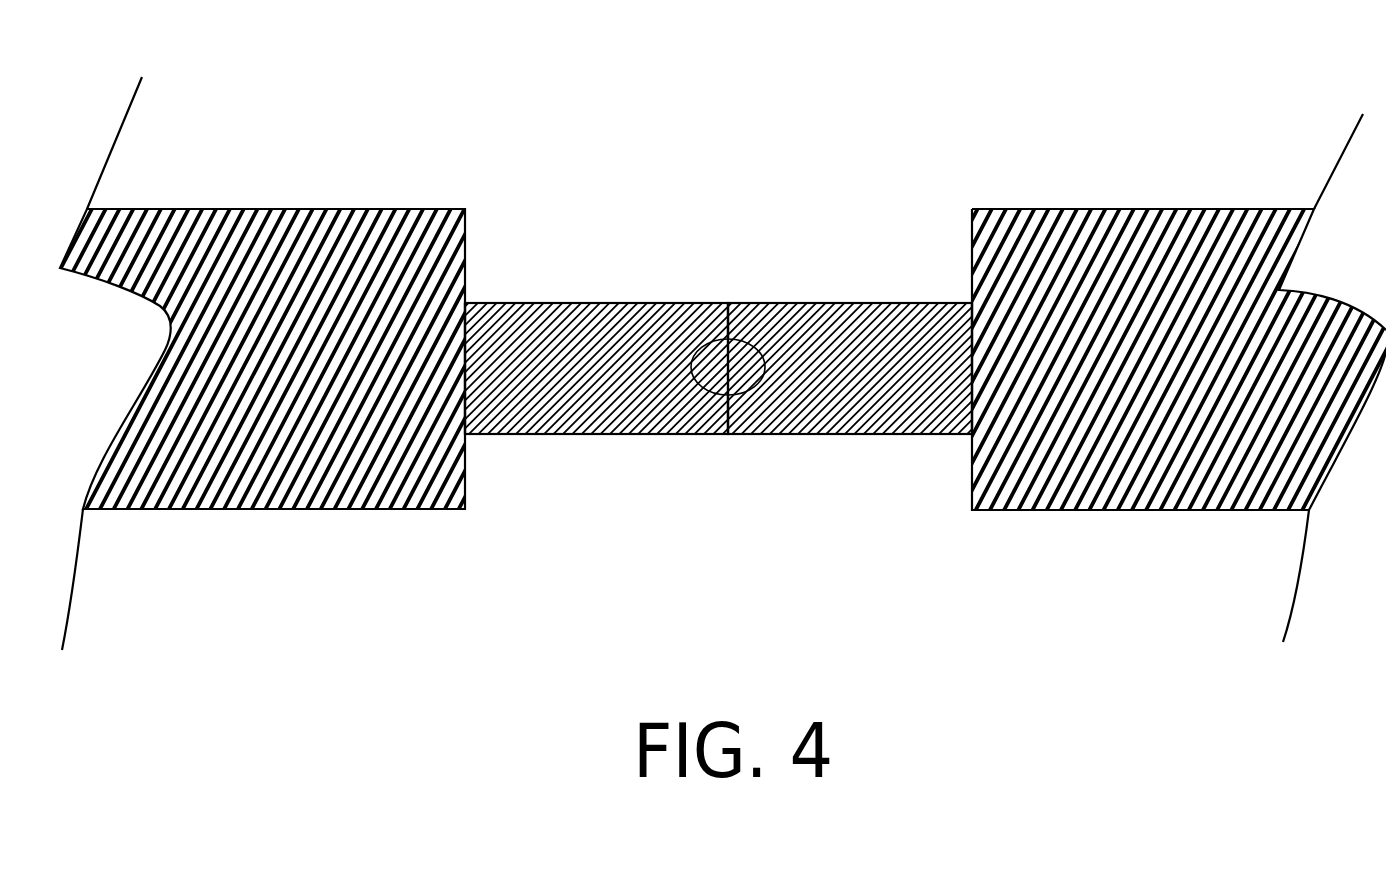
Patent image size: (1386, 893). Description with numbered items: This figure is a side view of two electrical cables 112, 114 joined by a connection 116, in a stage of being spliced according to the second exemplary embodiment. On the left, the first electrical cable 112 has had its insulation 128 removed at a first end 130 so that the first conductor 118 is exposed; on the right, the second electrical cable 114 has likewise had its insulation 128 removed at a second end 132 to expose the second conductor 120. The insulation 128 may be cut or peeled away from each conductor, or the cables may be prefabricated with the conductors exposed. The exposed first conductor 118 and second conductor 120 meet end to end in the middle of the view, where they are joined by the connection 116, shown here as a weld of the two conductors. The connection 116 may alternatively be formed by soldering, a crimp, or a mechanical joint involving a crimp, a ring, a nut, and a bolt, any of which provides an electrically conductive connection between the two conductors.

The first electrical cable 112 is at (313, 207).
The second electrical cable 114 is at (1133, 208).
The connection 116 is at (745, 399).
The first conductor 118 is at (617, 300).
The second conductor 120 is at (873, 300).
The insulation 128 is at (468, 435).
The first end 130 is at (538, 223).
The second end 132 is at (822, 245).